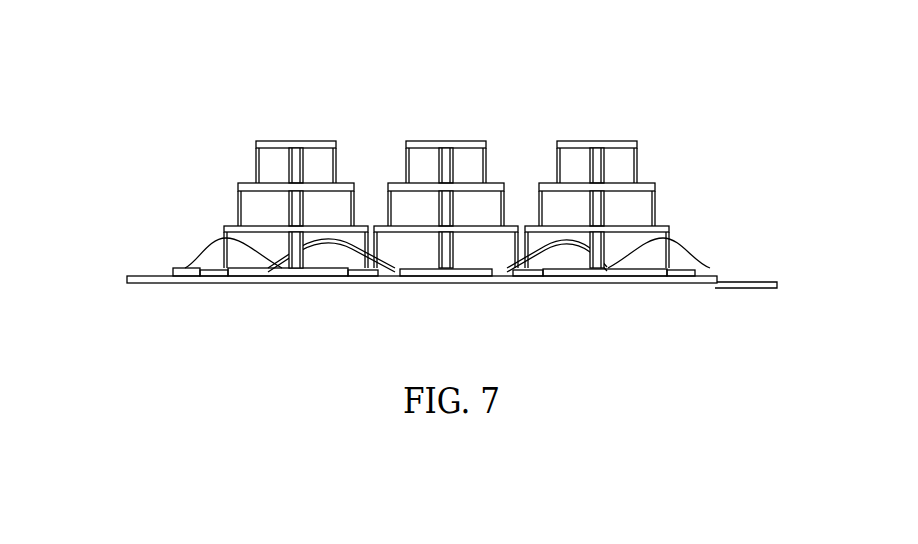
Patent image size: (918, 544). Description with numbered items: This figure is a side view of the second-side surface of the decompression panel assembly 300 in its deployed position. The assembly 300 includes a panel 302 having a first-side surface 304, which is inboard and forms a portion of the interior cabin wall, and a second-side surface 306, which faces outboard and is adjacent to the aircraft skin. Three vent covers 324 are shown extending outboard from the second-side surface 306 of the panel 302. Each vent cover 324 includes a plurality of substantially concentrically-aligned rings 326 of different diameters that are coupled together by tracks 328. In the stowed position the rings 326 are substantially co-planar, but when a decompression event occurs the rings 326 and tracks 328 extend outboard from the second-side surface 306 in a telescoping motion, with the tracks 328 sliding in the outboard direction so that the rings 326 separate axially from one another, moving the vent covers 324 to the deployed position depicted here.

The decompression panel assembly 300 is at (193, 85).
The panel 302 is at (715, 274).
The first-side surface 304 is at (162, 307).
The second-side surface 306 is at (143, 250).
The vent cover 324 is at (317, 142).
The rings 326 is at (510, 225).
The tracks 328 is at (668, 237).